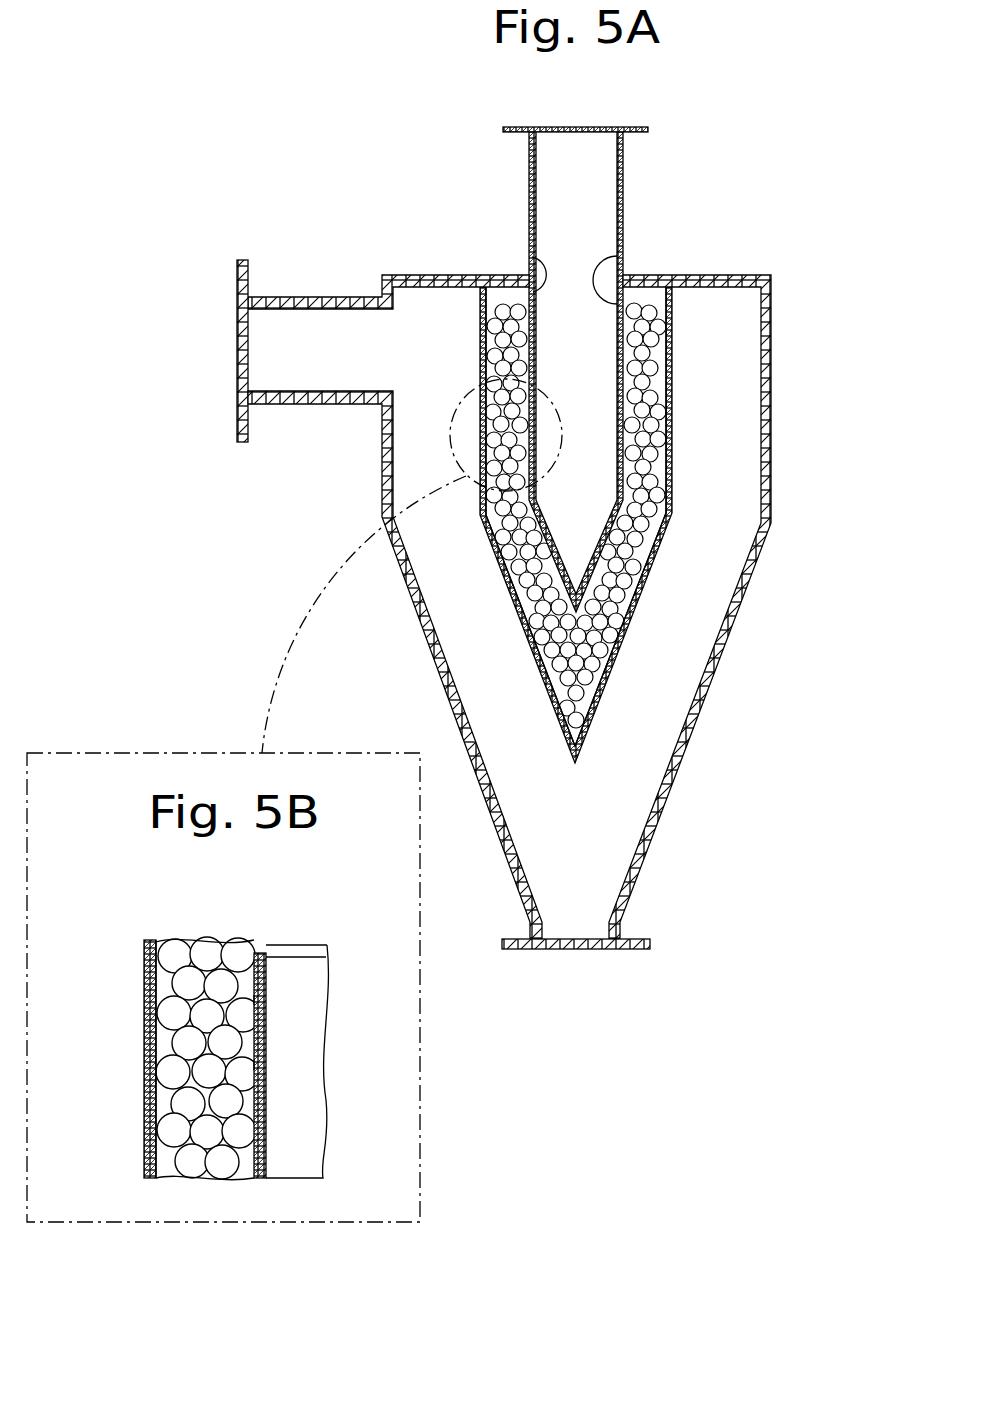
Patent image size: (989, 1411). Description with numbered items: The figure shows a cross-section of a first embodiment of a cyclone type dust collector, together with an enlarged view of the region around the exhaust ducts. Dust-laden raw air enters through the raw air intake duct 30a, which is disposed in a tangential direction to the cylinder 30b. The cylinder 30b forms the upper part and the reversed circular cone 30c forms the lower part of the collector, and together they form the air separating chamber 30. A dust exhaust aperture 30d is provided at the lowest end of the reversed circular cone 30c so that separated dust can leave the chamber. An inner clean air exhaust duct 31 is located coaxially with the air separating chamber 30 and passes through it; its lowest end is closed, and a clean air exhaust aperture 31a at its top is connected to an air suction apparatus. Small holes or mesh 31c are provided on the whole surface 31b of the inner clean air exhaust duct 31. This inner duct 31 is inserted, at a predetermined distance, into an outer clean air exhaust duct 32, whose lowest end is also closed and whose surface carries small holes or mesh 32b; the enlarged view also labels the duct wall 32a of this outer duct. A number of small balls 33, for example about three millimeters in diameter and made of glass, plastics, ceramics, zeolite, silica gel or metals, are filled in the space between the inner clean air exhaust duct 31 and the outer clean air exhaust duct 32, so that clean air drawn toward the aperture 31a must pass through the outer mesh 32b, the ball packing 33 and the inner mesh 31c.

In FIG. 5A, the air separating chamber 30 is at (503, 634).
In FIG. 5A, the raw air intake duct 30a is at (266, 353).
In FIG. 5A, the cylinder 30b is at (771, 357).
In FIG. 5A, the reversed circular cone 30c is at (668, 798).
In FIG. 5A, the dust exhaust aperture 30d is at (580, 930).
In FIG. 5A, the inner clean air exhaust duct 31 is at (588, 346).
In FIG. 5B, the inner clean air exhaust duct 31 is at (324, 1022).
In FIG. 5A, the clean air exhaust aperture 31a is at (577, 157).
In FIG. 5A, the surface 31b is at (532, 258).
In FIG. 5B, the surface 31b is at (258, 998).
In FIG. 5A, the small holes or mesh 31c is at (619, 259).
In FIG. 5B, the small holes or mesh 31c is at (258, 1065).
In FIG. 5A, the outer clean air exhaust duct 32 is at (667, 525).
In FIG. 5B, the outer clean air exhaust duct 32 is at (116, 1022).
In FIG. 5A, the outer screen 32a is at (672, 395).
In FIG. 5B, the outer screen 32a is at (146, 975).
In FIG. 5A, the small holes or mesh 32b is at (658, 432).
In FIG. 5B, the small holes or mesh 32b is at (150, 1045).
In FIG. 5A, the small balls 33 is at (647, 508).
In FIG. 5B, the small balls 33 is at (190, 968).